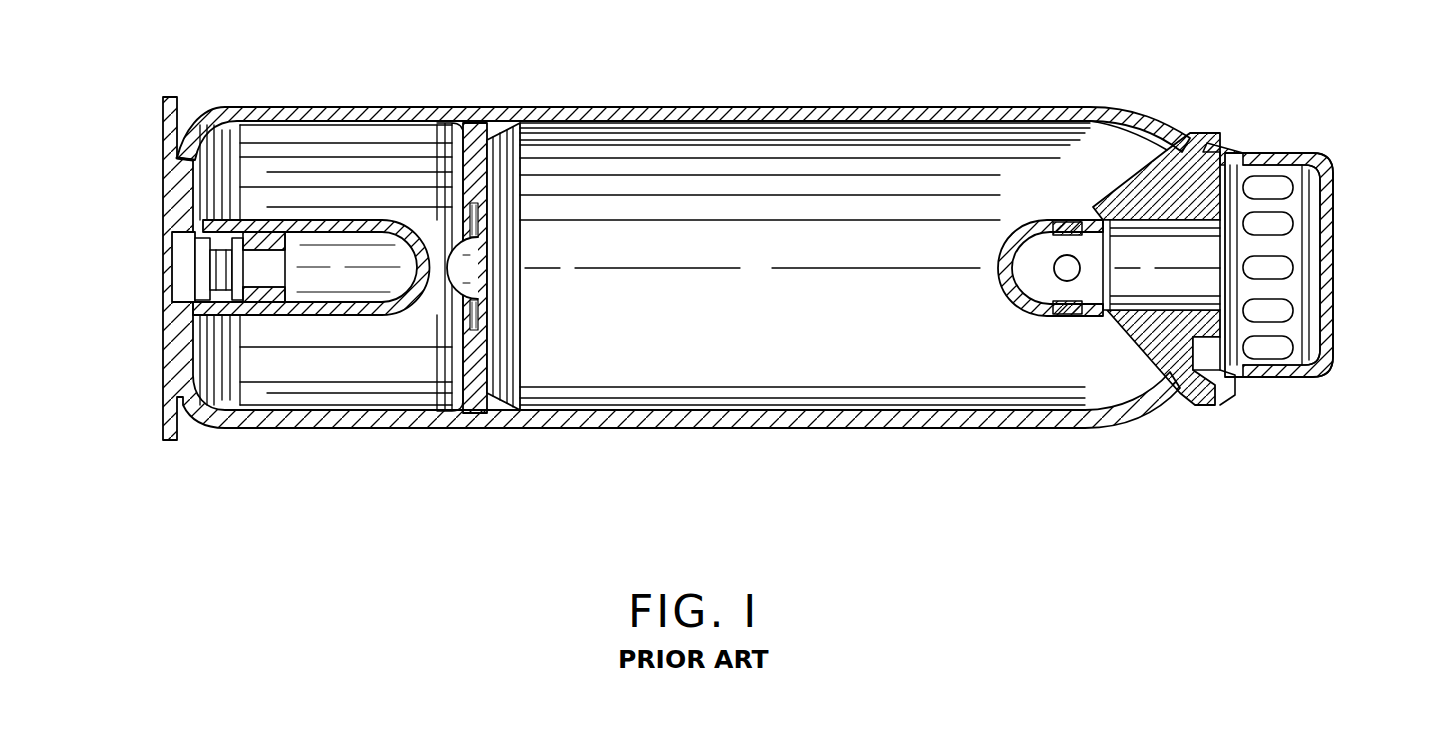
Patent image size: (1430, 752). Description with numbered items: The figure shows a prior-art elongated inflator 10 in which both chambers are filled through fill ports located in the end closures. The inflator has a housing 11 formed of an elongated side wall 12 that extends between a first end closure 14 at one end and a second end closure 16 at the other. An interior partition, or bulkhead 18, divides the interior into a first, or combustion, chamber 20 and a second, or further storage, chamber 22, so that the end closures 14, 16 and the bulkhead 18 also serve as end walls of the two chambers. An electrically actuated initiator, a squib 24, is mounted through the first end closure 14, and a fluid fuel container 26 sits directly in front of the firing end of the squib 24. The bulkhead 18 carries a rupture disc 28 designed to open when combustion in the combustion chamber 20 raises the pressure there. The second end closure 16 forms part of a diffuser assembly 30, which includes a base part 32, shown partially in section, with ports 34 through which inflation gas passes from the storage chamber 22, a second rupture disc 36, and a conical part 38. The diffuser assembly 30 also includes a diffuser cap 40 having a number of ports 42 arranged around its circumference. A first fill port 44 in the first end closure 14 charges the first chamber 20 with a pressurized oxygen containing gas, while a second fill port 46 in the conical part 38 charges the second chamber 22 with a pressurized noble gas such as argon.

The elongated inflator 10 is at (600, 104).
The housing 11 is at (723, 108).
The elongated side wall 12 is at (912, 107).
The first end closure 14 is at (170, 342).
The second end closure 16 is at (1178, 180).
The bulkhead 18 is at (485, 120).
The combustion chamber 20 is at (330, 147).
The further storage chamber 22 is at (815, 152).
The squib 24 is at (236, 252).
The fluid fuel container 26 is at (326, 287).
The rupture disc 28 is at (478, 252).
The diffuser assembly 30 is at (1232, 153).
The base part 32 is at (1004, 250).
The ports 34 is at (1071, 222).
The second rupture disc 36 is at (1095, 318).
The conical part 38 is at (1216, 398).
The diffuser cap 40 is at (1330, 348).
The ports 42 is at (1293, 378).
The first fill port 44 is at (165, 158).
The second fill port 46 is at (1197, 362).